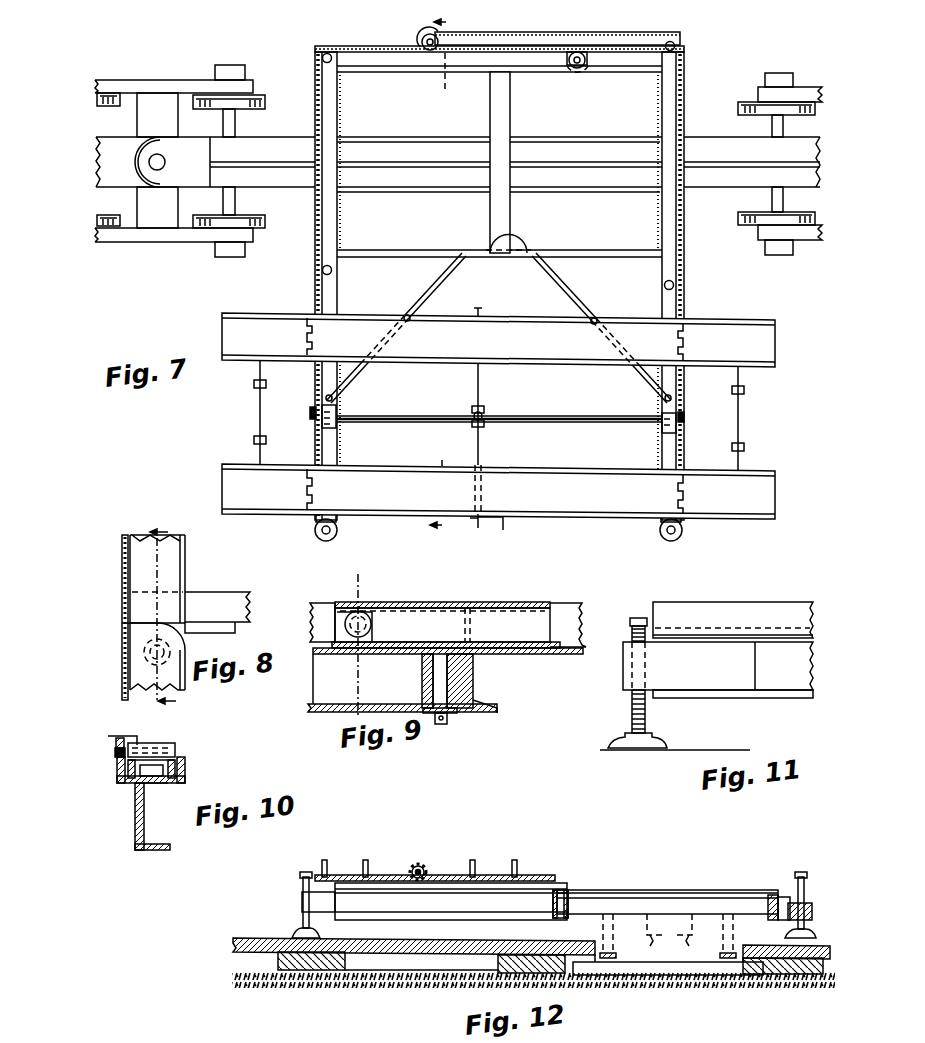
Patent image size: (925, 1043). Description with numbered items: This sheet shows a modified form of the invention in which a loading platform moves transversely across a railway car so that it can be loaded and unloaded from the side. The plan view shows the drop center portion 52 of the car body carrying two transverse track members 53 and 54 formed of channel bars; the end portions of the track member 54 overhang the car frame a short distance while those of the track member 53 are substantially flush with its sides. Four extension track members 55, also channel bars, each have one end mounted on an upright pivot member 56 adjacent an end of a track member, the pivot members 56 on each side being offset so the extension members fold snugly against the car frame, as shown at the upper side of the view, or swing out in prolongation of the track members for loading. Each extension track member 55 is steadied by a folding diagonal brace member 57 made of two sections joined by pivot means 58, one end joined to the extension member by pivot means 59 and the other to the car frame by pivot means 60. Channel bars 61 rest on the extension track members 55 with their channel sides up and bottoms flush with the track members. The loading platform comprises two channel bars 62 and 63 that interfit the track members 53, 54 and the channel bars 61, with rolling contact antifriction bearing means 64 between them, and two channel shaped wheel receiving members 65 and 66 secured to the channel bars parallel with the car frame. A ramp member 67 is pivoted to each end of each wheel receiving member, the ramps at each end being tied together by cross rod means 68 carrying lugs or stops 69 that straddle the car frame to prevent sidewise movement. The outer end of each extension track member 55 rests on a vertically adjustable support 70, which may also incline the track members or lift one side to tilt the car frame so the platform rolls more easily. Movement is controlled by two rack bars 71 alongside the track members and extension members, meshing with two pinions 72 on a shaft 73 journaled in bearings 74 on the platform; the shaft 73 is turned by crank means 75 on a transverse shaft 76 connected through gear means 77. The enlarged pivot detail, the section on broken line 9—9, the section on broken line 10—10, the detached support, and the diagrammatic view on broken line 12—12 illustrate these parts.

In FIG. 8, the broken line 9— 9 is at (167, 613).
In FIG. 9, the broken line 10— 10 is at (362, 638).
In FIG. 7, the broken line 12— 12 is at (452, 275).
In FIG. 7, the drop center portion 52 is at (562, 145).
In FIG. 12, the drop center portion 52 is at (668, 936).
In FIG. 7, the transverse track member 53 is at (320, 225).
In FIG. 8, the transverse track member 53 is at (175, 570).
In FIG. 9, the transverse track member 53 is at (557, 648).
In FIG. 12, the transverse track member 53 is at (708, 898).
In FIG. 7, the transverse track member 54 is at (676, 236).
In FIG. 10, the extension track member 55 is at (135, 830).
In FIG. 9, the extension track member 55 is at (328, 702).
In FIG. 11, the extension track member 55 is at (789, 698).
In FIG. 12, the extension track member 55 is at (452, 912).
In FIG. 7, the upright pivot member 56 is at (322, 58).
In FIG. 8, the upright pivot member 56 is at (158, 652).
In FIG. 9, the upright pivot member 56 is at (445, 686).
In FIG. 7, the folding diagonal brace member 57 is at (547, 266).
In FIG. 7, the pivot means 58 is at (410, 322).
In FIG. 7, the pivot means 59 is at (333, 398).
In FIG. 7, the pivot means 60 is at (500, 243).
In FIG. 7, the channel bar 61 is at (538, 84).
In FIG. 8, the channel bar 61 is at (144, 683).
In FIG. 10, the channel bar 61 is at (186, 781).
In FIG. 9, the channel bar 61 is at (321, 647).
In FIG. 11, the channel bar 61 is at (782, 626).
In FIG. 12, the channel bar 61 is at (544, 890).
In FIG. 7, the channel bar 62 is at (330, 456).
In FIG. 10, the channel bar 62 is at (172, 750).
In FIG. 9, the channel bar 62 is at (514, 620).
In FIG. 12, the channel bar 62 is at (455, 884).
In FIG. 7, the channel bar 63 is at (668, 455).
In FIG. 10, the rolling contact antifriction bearing means 64 is at (151, 784).
In FIG. 9, the rolling contact antifriction bearing means 64 is at (372, 616).
In FIG. 7, the channel shaped wheel receiving member 65 is at (541, 362).
In FIG. 12, the channel shaped wheel receiving member 65 is at (346, 876).
In FIG. 7, the channel shaped wheel receiving member 66 is at (539, 479).
In FIG. 12, the channel shaped wheel receiving member 66 is at (505, 876).
In FIG. 7, the ramp member 67 is at (238, 362).
In FIG. 7, the cross rod means 68 is at (252, 438).
In FIG. 7, the lugs or stops 69 is at (266, 387).
In FIG. 7, the vertically adjustable support 70 is at (422, 38).
In FIG. 11, the vertically adjustable support 70 is at (668, 740).
In FIG. 12, the vertically adjustable support 70 is at (303, 917).
In FIG. 7, the rack bar 71 is at (316, 228).
In FIG. 10, the rack bar 71 is at (126, 780).
In FIG. 9, the rack bar 71 is at (316, 604).
In FIG. 7, the pinion 72 is at (310, 418).
In FIG. 10, the pinion 72 is at (115, 758).
In FIG. 12, the pinion 72 is at (418, 864).
In FIG. 7, the shaft 73 is at (436, 420).
In FIG. 10, the shaft 73 is at (178, 760).
In FIG. 12, the shaft 73 is at (410, 874).
In FIG. 7, the bearing 74 is at (330, 433).
In FIG. 10, the bearing 74 is at (112, 737).
In FIG. 7, the crank means 75 is at (485, 535).
In FIG. 7, the transverse shaft 76 is at (480, 456).
In FIG. 7, the gear means 77 is at (472, 406).